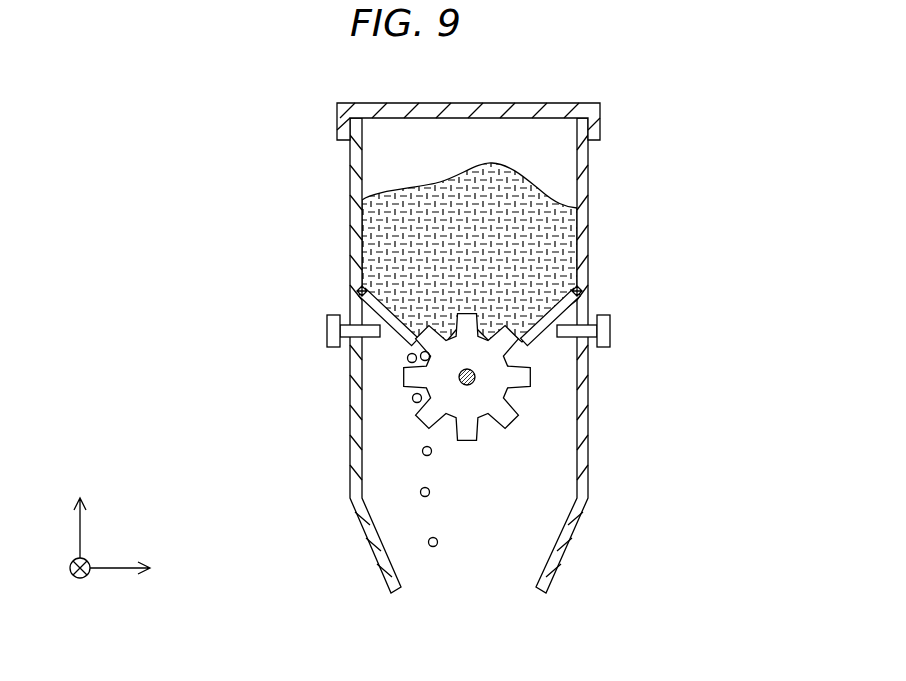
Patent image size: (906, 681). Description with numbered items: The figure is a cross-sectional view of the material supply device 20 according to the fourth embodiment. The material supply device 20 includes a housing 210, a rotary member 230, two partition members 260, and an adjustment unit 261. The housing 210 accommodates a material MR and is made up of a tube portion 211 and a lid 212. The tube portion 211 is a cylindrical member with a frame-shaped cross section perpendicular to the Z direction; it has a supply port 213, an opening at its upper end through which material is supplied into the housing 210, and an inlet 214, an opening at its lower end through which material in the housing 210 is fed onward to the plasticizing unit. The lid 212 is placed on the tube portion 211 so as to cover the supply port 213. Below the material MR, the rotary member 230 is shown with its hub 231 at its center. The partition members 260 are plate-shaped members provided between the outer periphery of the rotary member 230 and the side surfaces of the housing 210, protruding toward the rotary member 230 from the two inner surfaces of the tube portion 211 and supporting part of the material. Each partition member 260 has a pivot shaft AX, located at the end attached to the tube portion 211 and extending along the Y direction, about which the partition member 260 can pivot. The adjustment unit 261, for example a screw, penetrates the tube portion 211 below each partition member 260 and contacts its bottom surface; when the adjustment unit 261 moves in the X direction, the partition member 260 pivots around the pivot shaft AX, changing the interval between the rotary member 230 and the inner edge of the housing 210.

The material supply device 20 is at (138, 120).
The housing 210 is at (692, 118).
The tube portion 211 is at (589, 162).
The lid 212 is at (599, 124).
The supply port 213 is at (372, 122).
The inlet 214 is at (398, 579).
The rotary member 230 is at (488, 392).
The rotation shaft 231 is at (468, 386).
The partition members 260 is at (569, 303).
The adjustment unit 261 is at (592, 336).
The material MR is at (362, 227).
The pivot shaft AX is at (579, 289).